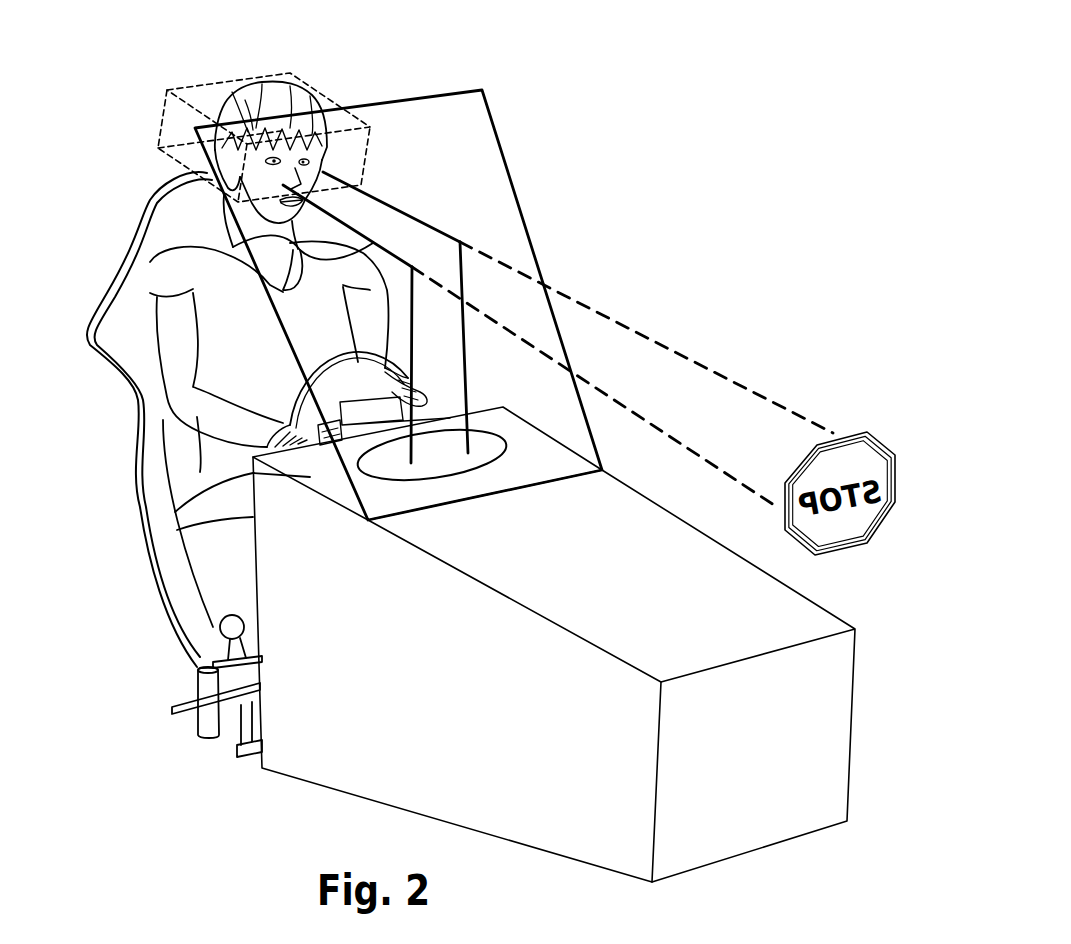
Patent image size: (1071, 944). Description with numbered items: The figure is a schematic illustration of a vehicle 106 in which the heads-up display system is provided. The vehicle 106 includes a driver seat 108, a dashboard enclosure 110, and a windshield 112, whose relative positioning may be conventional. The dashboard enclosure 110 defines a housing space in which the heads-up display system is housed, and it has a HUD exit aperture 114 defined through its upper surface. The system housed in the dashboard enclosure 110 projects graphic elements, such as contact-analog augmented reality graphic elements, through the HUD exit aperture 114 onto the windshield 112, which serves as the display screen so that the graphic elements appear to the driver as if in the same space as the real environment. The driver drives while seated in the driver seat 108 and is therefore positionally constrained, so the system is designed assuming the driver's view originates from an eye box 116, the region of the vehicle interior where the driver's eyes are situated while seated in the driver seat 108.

The vehicle 106 is at (665, 94).
The driver seat 108 is at (103, 285).
The dashboard enclosure 110 is at (177, 510).
The windshield 112 is at (525, 223).
The HUD exit aperture 114 is at (493, 450).
The eye box 116 is at (321, 90).